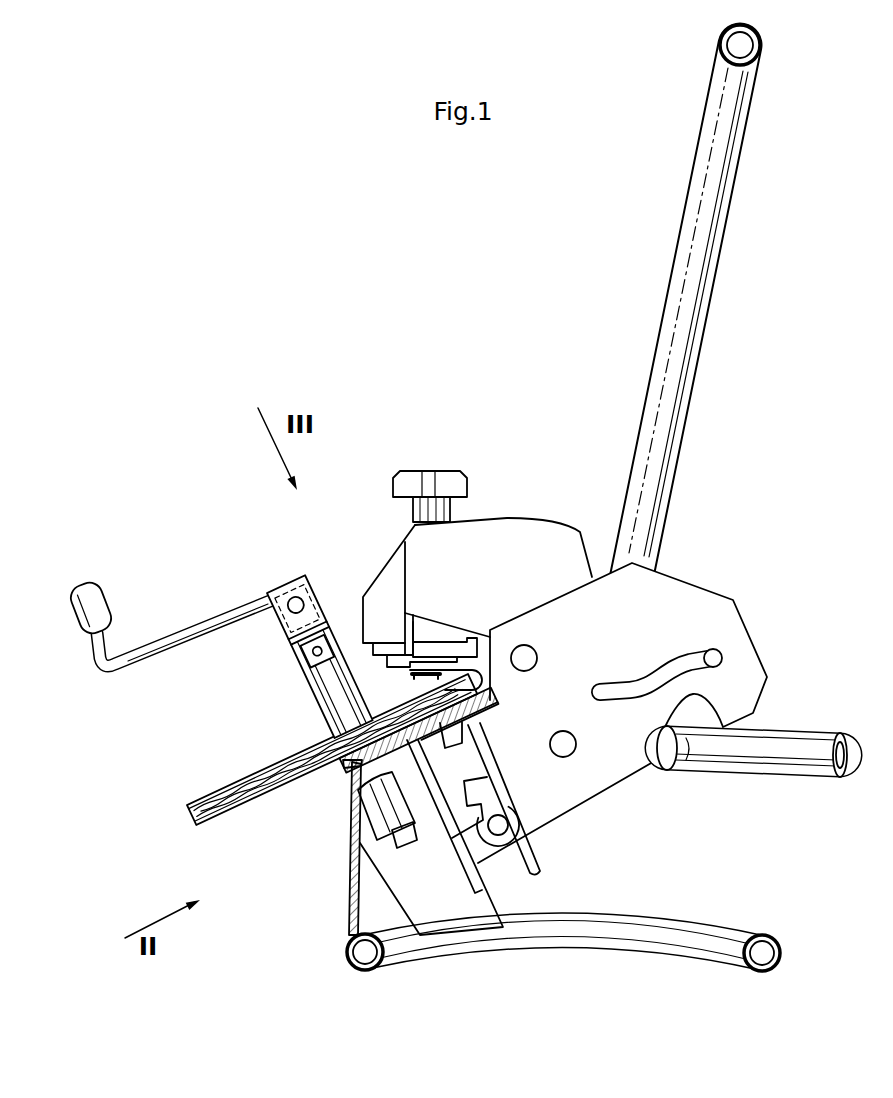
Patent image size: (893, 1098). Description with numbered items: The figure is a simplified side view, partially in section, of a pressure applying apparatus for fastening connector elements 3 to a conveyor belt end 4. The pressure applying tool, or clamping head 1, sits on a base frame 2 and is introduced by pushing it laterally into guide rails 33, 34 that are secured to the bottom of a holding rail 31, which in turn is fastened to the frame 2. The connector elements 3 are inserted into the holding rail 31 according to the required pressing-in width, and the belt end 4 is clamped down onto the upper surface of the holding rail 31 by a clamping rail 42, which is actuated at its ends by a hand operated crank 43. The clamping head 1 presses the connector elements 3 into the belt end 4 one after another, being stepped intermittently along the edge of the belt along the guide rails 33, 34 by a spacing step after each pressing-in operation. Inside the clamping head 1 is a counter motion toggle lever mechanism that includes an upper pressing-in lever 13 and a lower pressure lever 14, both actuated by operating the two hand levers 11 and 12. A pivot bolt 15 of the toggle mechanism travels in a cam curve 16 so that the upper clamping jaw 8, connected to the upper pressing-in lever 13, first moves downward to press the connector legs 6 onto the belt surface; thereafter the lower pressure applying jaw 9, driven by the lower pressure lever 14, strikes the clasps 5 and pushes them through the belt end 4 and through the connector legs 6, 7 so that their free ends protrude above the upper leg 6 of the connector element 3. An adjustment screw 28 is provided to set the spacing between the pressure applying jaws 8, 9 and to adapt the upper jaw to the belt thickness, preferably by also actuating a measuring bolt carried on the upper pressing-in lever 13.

The clamping head 1 is at (717, 569).
The base frame 2 is at (671, 930).
The connector elements 3 is at (488, 677).
The conveyor belt end 4 is at (230, 815).
The clasps 5 is at (446, 752).
The connector legs 6 is at (428, 668).
The connector legs 7 is at (466, 728).
The upper clamping jaw 8 is at (457, 645).
The lower pressure applying jaw 9 is at (478, 782).
The hand lever 11 is at (705, 291).
The hand lever 12 is at (776, 766).
The upper pressing-in lever 13 is at (523, 533).
The lower pressure lever 14 is at (527, 826).
The pivot bolt 15 is at (722, 657).
The cam curve 16 is at (632, 688).
The adjustment screw 28 is at (456, 476).
The holding rail 31 is at (345, 769).
The guide rail 33 is at (502, 709).
The guide rail 34 is at (403, 747).
The clamping rail 42 is at (305, 686).
The hand operated crank 43 is at (170, 643).